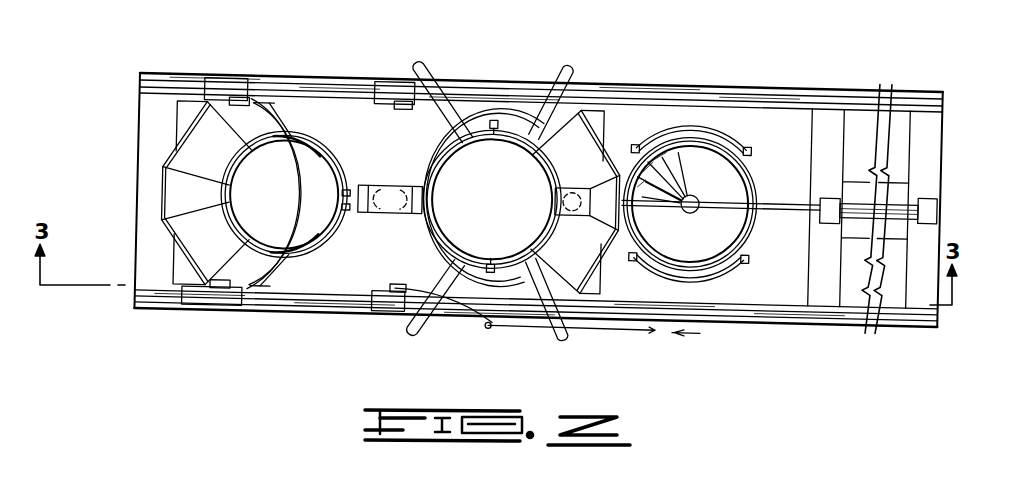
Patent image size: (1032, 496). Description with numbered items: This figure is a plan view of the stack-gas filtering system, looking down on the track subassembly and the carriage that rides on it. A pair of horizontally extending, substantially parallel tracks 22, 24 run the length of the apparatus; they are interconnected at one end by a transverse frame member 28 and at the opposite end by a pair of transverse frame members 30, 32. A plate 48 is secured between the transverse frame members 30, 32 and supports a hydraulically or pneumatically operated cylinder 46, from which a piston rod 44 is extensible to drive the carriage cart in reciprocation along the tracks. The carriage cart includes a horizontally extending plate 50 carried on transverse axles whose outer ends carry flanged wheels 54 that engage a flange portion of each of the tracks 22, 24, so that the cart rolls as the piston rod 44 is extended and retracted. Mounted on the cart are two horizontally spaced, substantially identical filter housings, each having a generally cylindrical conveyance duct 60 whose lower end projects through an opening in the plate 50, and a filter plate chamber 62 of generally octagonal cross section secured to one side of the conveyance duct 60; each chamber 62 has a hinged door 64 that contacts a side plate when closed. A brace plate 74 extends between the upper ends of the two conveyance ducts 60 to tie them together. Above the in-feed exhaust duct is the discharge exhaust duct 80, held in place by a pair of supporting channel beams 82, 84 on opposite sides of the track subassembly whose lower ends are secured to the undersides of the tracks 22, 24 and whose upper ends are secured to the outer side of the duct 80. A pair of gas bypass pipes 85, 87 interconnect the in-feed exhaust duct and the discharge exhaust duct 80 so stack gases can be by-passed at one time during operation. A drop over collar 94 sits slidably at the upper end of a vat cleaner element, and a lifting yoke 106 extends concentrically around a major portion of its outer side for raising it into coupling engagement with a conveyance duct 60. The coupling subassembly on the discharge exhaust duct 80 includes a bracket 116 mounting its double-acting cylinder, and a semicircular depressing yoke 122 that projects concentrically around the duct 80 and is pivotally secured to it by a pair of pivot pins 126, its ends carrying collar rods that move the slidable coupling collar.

The track 22 is at (777, 273).
The track 24 is at (760, 87).
The transverse frame member 28 is at (140, 147).
The transverse frame member 30 is at (819, 219).
The transverse frame member 32 is at (923, 247).
The piston rod 44 is at (779, 188).
The cylinder 46 is at (860, 195).
The plate 48 is at (850, 161).
The horizontally extending plate 50 is at (180, 258).
The wheels 54 is at (207, 76).
The conveyance duct 60 is at (337, 223).
The filter plate chamber 62 is at (162, 229).
The door 64 is at (176, 146).
The brace plate 74 is at (387, 179).
The discharge exhaust duct 80 is at (441, 218).
The supporting channel beam 82 is at (572, 327).
The supporting channel beam 84 is at (420, 52).
The gas bypass pipe 85 is at (424, 328).
The gas bypass pipe 87 is at (569, 50).
The drop over collar 94 is at (738, 146).
The lifting yoke 106 is at (693, 112).
The bracket 116 is at (570, 175).
The depressing yoke 122 is at (495, 111).
The pivot pins 126 is at (548, 258).